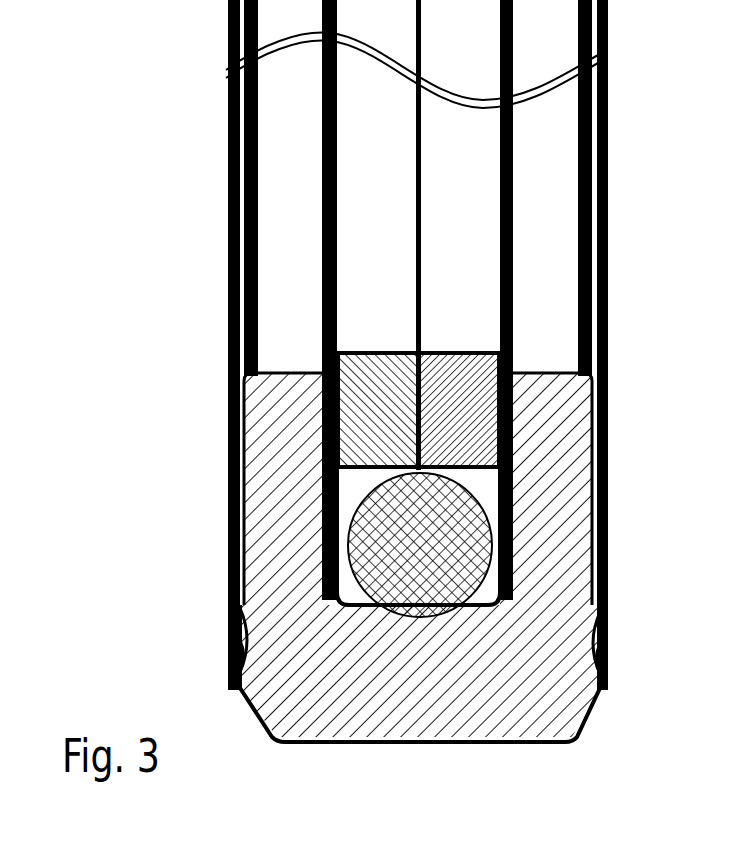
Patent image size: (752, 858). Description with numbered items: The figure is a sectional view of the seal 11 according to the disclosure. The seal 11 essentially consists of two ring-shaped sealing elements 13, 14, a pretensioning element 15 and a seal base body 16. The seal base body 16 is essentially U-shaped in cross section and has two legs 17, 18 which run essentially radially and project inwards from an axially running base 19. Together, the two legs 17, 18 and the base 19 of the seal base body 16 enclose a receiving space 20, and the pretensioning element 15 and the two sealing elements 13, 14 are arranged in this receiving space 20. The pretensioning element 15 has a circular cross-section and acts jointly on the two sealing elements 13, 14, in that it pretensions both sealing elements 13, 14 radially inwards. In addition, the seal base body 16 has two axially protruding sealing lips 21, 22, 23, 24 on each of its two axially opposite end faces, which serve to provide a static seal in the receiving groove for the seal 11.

The seal 11 is at (178, 147).
The sealing element 13 is at (360, 410).
The sealing element 14 is at (500, 403).
The pretensioning element 15 is at (400, 522).
The seal base body 16 is at (300, 640).
The leg 17 is at (270, 465).
The leg 18 is at (555, 472).
The base 19 is at (403, 705).
The receiving space 20 is at (492, 502).
The sealing lip 21 is at (600, 612).
The sealing lip 22 is at (600, 675).
The sealing lip 23 is at (240, 607).
The sealing lip 24 is at (240, 672).